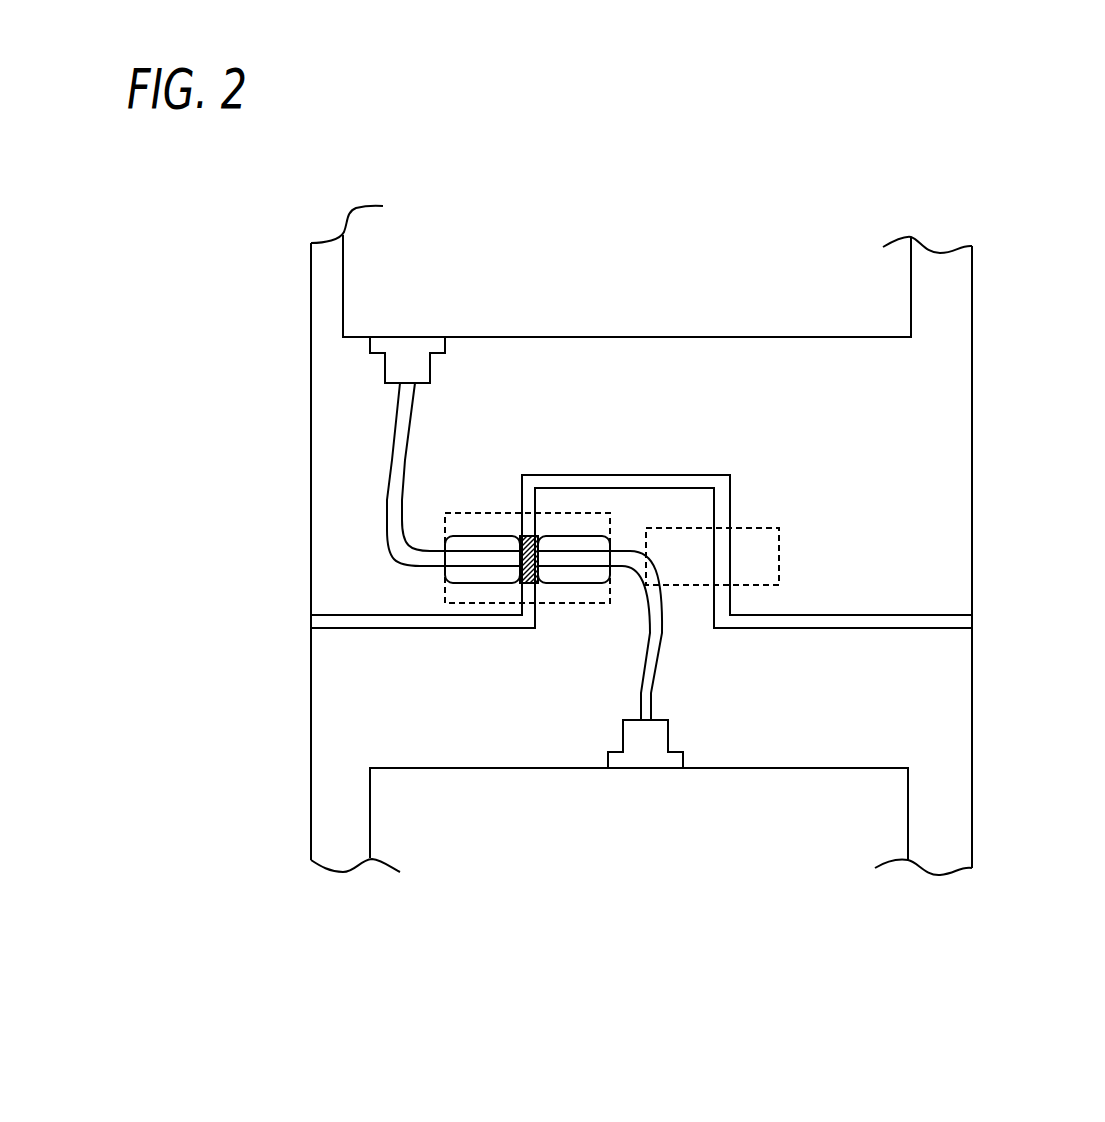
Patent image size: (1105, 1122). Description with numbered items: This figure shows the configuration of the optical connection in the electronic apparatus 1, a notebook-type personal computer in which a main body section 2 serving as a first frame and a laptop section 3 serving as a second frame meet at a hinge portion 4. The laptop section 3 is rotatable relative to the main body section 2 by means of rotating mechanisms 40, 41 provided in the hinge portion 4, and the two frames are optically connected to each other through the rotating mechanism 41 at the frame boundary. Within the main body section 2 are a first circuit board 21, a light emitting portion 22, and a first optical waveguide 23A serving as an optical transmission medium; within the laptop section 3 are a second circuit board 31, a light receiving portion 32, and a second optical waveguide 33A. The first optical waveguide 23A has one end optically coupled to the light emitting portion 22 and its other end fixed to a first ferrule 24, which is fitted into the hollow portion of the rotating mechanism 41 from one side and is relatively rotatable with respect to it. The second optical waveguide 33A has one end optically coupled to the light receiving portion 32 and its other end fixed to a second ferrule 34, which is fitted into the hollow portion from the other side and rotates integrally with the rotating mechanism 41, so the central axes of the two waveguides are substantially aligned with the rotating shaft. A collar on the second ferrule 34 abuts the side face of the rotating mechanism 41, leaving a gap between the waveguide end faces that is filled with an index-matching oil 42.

The electronic apparatus 1 is at (952, 200).
The main body section 2 is at (952, 848).
The laptop section 3 is at (947, 338).
The hinge portion 4 is at (716, 484).
The first circuit board 21 is at (855, 804).
The light emitting portion 22 is at (670, 737).
The first optical waveguide 23A is at (658, 653).
The first ferrule 24 is at (583, 543).
The second circuit board 31 is at (343, 284).
The light receiving portion 32 is at (385, 372).
The second optical waveguide 33A is at (395, 436).
The second ferrule 34 is at (465, 545).
The rotating mechanism 40 is at (780, 540).
The rotating mechanism 41 is at (444, 596).
The index-matching oil 42 is at (520, 583).